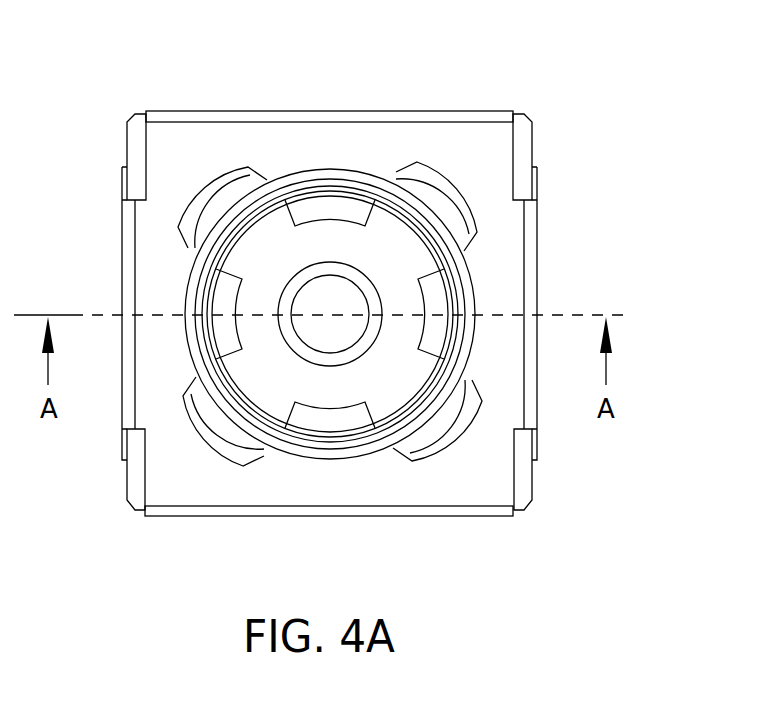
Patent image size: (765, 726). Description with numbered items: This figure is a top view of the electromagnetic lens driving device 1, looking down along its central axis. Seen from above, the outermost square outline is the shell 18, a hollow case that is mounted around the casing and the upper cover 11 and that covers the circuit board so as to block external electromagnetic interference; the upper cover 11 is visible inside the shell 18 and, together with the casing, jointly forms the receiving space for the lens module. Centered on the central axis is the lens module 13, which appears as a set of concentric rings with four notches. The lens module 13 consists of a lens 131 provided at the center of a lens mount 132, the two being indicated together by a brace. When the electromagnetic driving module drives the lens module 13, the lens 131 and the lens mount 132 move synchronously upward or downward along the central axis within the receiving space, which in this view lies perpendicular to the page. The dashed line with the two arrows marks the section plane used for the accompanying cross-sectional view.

The electromagnetic lens driving device 1 is at (128, 68).
The upper cover 11 is at (462, 197).
The lens module 13 is at (663, 118).
The lens 131 is at (400, 262).
The lens mount 132 is at (470, 297).
The shell 18 is at (463, 140).